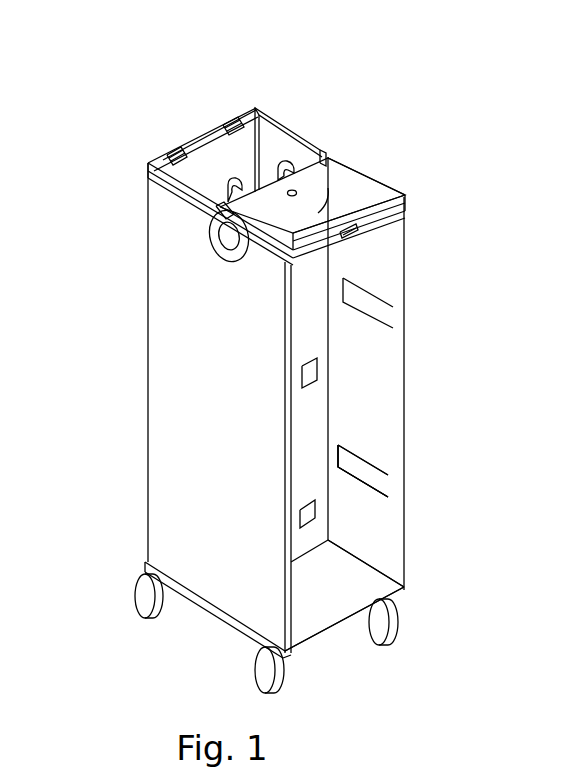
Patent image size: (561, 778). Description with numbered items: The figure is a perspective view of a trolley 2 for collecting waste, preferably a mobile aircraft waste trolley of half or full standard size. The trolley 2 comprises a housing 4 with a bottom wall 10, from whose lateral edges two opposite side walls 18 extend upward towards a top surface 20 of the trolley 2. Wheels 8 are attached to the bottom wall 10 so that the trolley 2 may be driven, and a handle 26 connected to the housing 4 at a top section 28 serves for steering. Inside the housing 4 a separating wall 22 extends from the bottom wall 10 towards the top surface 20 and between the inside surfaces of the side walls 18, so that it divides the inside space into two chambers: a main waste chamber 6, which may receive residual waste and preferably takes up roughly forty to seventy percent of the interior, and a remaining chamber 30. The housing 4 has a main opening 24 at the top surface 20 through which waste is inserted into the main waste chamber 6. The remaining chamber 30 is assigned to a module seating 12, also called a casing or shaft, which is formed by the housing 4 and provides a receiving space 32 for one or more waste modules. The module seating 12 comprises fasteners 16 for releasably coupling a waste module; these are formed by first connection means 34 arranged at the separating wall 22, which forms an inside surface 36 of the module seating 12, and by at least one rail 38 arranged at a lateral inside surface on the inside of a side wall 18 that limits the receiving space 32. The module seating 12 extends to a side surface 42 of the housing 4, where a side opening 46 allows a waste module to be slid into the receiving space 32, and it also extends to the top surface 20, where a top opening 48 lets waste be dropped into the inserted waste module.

The trolley 2 is at (415, 106).
The housing 4 is at (410, 222).
The main waste chamber 6 is at (216, 148).
The wheels 8 is at (147, 627).
The bottom wall 10 is at (216, 620).
The module seating 12 is at (387, 563).
The fasteners 16 is at (380, 456).
The side walls 18 is at (365, 278).
The top surface 20 is at (283, 110).
The separating wall 22 is at (314, 212).
The main opening 24 is at (249, 125).
The handle 26 is at (412, 179).
The top section 28 is at (140, 259).
The remaining chamber 30 is at (370, 188).
The receiving space 32 is at (332, 597).
The first connection means 34 is at (307, 358).
The inside surface 36 is at (300, 287).
The rail 38 is at (358, 445).
The side surface 42 is at (396, 352).
The side opening 46 is at (385, 539).
The top opening 48 is at (353, 186).